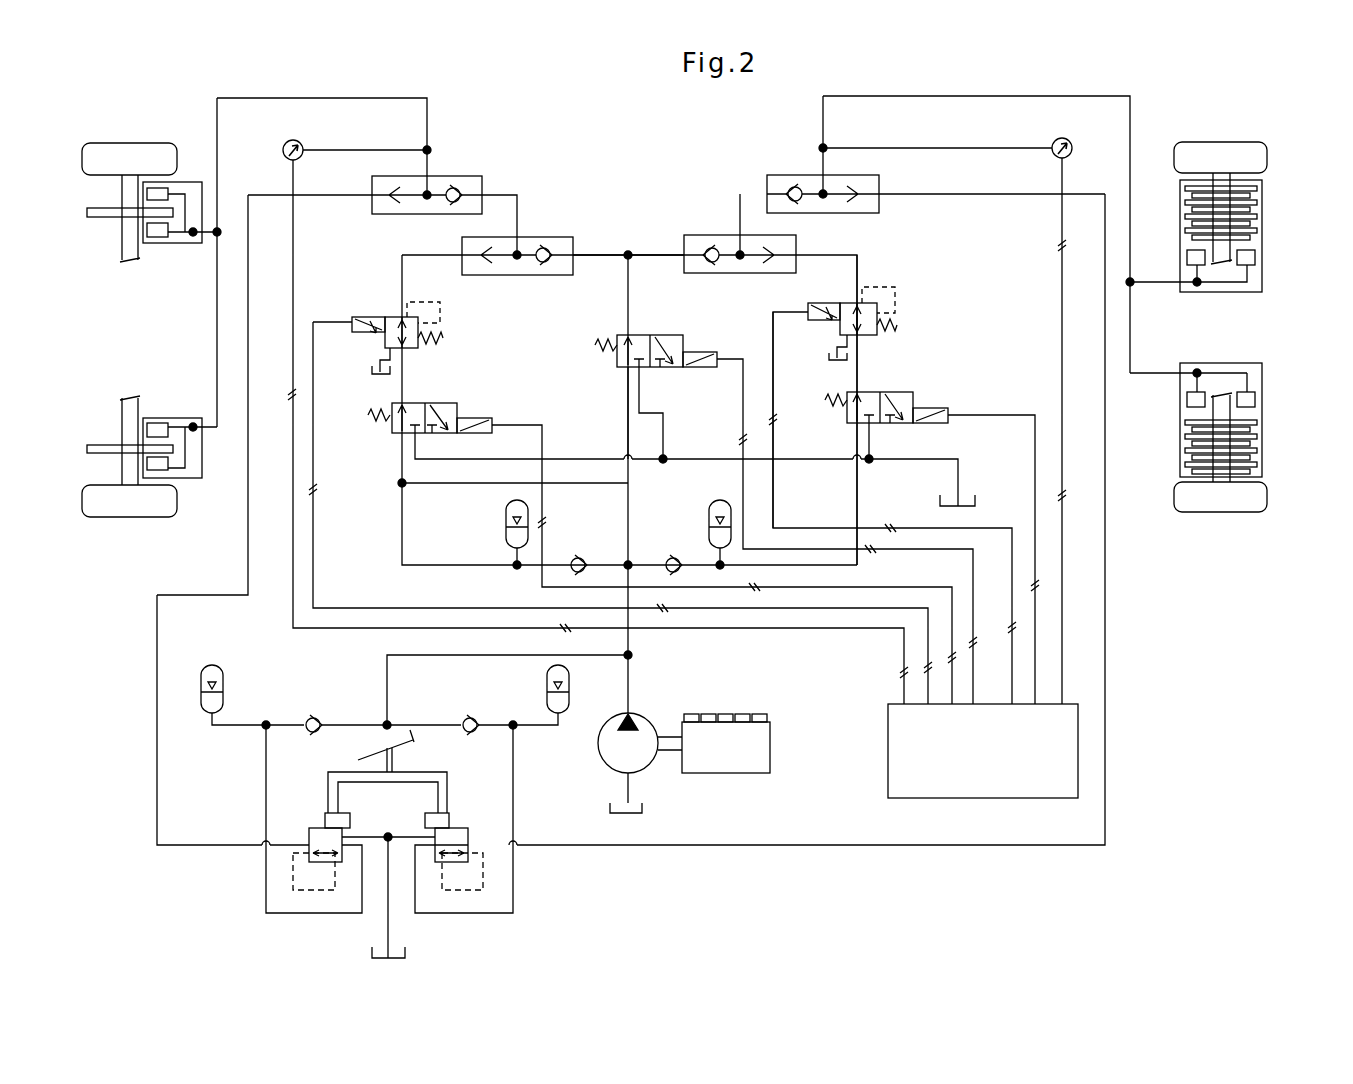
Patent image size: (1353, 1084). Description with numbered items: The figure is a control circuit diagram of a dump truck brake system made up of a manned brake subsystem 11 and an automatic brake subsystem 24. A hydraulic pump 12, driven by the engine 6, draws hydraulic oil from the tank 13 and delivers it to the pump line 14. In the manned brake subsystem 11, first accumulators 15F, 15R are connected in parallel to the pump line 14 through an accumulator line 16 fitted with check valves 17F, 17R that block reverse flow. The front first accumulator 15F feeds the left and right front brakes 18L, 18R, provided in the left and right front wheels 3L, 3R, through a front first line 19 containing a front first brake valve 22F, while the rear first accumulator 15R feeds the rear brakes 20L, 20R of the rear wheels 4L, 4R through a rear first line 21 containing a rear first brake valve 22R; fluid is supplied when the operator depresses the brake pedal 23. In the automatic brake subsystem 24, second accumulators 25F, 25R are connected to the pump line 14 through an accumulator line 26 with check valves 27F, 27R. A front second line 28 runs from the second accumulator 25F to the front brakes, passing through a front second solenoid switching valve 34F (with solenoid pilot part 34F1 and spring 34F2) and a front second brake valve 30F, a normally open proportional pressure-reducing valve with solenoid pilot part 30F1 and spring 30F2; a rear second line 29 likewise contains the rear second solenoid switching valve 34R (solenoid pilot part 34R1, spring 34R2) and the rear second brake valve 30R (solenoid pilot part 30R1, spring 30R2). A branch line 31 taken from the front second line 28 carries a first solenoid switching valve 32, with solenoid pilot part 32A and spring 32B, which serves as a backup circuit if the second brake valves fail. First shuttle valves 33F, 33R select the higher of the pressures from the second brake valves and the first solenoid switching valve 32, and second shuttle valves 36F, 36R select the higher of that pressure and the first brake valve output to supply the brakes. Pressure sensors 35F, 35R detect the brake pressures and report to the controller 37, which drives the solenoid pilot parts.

The right front wheel 3R is at (130, 142).
The left front wheel 3L is at (130, 503).
The right rear wheel 4R is at (1222, 158).
The left rear wheel 4L is at (1222, 500).
The engine 6 is at (756, 768).
The manned brake subsystem 11 is at (553, 905).
The hydraulic pump 12 is at (652, 716).
The tank 13 is at (645, 810).
The pump line 14 is at (632, 650).
The front first accumulator 15F is at (212, 664).
The rear first accumulator 15R is at (558, 727).
The accumulator line 16 is at (370, 722).
The check valve 17F is at (310, 716).
The check valve 17R is at (470, 716).
The right front brake 18R is at (178, 245).
The left front brake 18L is at (178, 416).
The front first line 19 is at (157, 760).
The right rear brake 20R is at (1240, 292).
The left rear brake 20L is at (1240, 363).
The rear first line 21 is at (1105, 696).
The front first brake valve 22F is at (315, 828).
The rear first brake valve 22R is at (452, 828).
The brake pedal 23 is at (413, 738).
The automatic brake subsystem 24 is at (634, 214).
The front second accumulator 25F is at (505, 522).
The rear second accumulator 25R is at (710, 510).
The accumulator line 26 is at (628, 545).
The check valve 27F is at (580, 556).
The check valve 27R is at (672, 556).
The front second line 28 is at (402, 520).
The rear second line 29 is at (857, 262).
The front second brake valve 30F is at (398, 314).
The solenoid pilot part 30F1 is at (362, 318).
The spring 30F2 is at (445, 336).
The rear second brake valve 30R is at (877, 338).
The solenoid pilot part 30R1 is at (820, 304).
The spring 30R2 is at (900, 325).
The branch line 31 is at (628, 420).
The first solenoid switching valve 32 is at (617, 362).
The solenoid pilot part 32A is at (700, 368).
The spring 32B is at (600, 342).
The front first shuttle valve 33F is at (540, 237).
The rear first shuttle valve 33R is at (712, 235).
The front second solenoid switching valve 34F is at (398, 404).
The solenoid pilot part 34F1 is at (480, 418).
The spring 34F2 is at (380, 412).
The rear second solenoid switching valve 34R is at (851, 394).
The solenoid pilot part 34R1 is at (942, 420).
The spring 34R2 is at (835, 402).
The front pressure sensor 35F is at (300, 142).
The rear pressure sensor 35R is at (1055, 141).
The front second shuttle valve 36F is at (467, 176).
The rear second shuttle valve 36R is at (790, 175).
The controller 37 is at (888, 755).